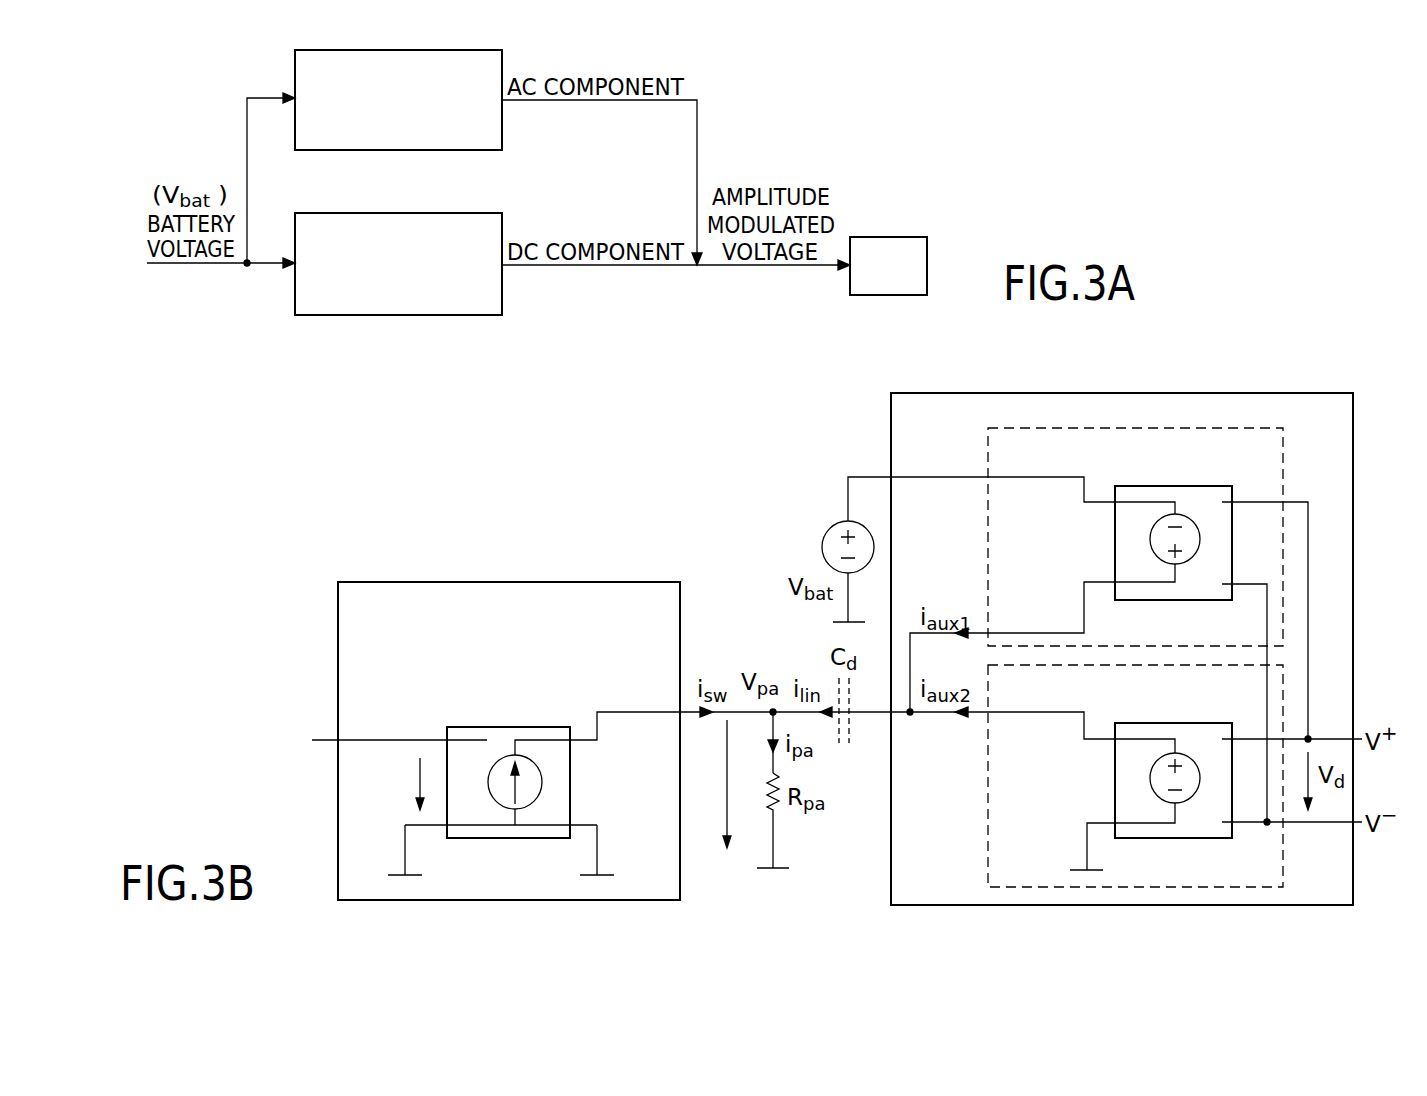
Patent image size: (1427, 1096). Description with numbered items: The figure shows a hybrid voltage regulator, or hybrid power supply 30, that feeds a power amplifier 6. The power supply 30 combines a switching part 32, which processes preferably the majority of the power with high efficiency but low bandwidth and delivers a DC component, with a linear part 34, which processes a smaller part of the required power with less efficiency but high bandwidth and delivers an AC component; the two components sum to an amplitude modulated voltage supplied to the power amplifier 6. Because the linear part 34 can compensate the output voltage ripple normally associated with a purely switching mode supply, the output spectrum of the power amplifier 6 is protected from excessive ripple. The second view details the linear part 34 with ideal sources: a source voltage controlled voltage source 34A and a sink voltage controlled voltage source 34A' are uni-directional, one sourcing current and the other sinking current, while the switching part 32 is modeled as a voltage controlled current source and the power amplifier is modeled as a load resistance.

In FIG. 3A, the power amplifier 6 is at (887, 237).
In FIG. 3A, the hybrid power supply 30 is at (515, 112).
In FIG. 3A, the switching part 32 is at (350, 213).
In FIG. 3B, the switching part 32 is at (338, 655).
In FIG. 3A, the linear part 34 is at (295, 70).
In FIG. 3B, the linear part 34 is at (1260, 393).
In FIG. 3B, the voltage controlled voltage source 34A is at (1109, 625).
In FIG. 3B, the voltage controlled voltage source 34A' is at (1096, 776).